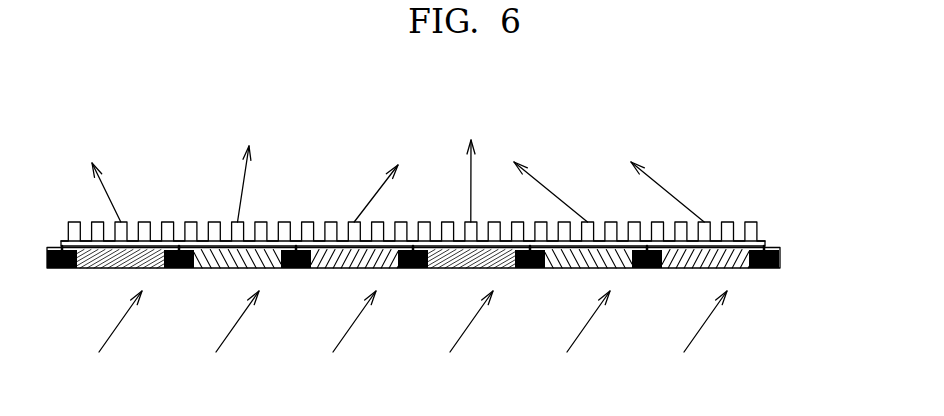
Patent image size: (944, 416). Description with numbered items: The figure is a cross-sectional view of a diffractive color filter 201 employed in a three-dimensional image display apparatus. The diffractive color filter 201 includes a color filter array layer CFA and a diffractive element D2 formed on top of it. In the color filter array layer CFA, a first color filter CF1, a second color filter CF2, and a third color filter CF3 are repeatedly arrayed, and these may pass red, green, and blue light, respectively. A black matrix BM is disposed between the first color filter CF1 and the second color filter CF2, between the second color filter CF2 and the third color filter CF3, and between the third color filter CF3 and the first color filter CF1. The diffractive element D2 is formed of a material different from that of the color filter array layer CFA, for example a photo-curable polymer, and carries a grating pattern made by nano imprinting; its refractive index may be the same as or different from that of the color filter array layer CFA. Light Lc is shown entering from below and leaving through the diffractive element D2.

The diffractive color filter 201 is at (752, 172).
The diffractive element D2 is at (769, 232).
The color filter array layer CFA is at (785, 258).
The black matrix BM is at (763, 269).
The first color filter CF1 is at (119, 267).
The second color filter CF2 is at (235, 266).
The third color filter CF3 is at (353, 266).
The incident light Lc is at (413, 338).